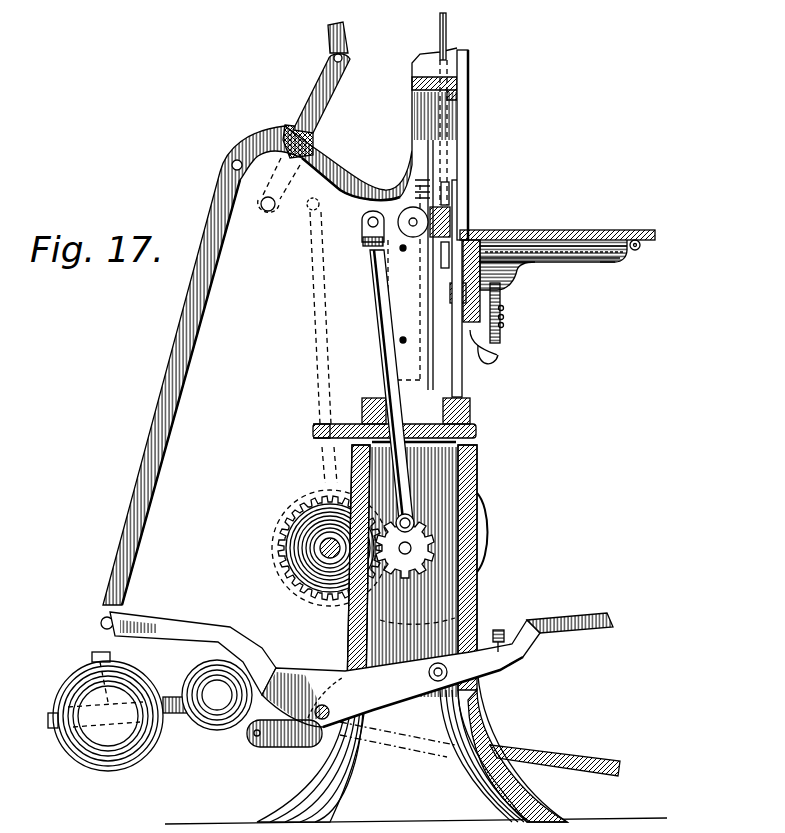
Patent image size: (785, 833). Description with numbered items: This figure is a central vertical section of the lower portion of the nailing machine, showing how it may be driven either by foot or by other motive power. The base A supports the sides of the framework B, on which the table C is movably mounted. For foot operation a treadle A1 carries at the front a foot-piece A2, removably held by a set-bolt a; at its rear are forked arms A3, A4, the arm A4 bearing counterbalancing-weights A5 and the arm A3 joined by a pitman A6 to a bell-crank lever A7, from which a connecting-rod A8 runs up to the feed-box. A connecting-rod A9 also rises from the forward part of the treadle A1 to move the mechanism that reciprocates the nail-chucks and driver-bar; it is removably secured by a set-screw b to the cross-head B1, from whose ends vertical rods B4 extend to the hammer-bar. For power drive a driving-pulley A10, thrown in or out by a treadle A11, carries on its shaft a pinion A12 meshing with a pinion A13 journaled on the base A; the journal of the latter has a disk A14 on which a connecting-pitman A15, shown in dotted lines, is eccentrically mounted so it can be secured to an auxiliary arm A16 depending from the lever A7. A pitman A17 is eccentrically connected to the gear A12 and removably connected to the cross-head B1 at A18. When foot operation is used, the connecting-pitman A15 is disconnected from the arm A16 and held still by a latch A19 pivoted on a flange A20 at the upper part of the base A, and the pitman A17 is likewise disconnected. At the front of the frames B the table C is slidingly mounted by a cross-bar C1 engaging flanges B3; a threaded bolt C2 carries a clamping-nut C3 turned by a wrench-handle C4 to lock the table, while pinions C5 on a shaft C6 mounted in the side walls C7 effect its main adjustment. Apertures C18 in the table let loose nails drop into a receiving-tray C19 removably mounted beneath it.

The base A is at (412, 435).
The treadle A1 is at (393, 683).
The foot-piece A2 is at (597, 603).
The forked arm A3 is at (203, 613).
The forked arm A4 is at (175, 722).
The counterbalancing-weights A5 is at (197, 668).
The pitman A6 is at (163, 430).
The bell-crank lever A7 is at (318, 95).
The connecting-rod A8 is at (325, 42).
The connecting-rod A9 is at (477, 440).
The driving-pulley A10 is at (483, 543).
The treadle A11 is at (547, 737).
The pinion A12 is at (405, 548).
The pinion A13 is at (273, 542).
The disk A14 is at (307, 497).
The connecting-pitman A15 is at (313, 312).
The auxiliary arm A16 is at (277, 198).
The pitman A17 is at (383, 338).
The removable connection A18 is at (365, 220).
The latch A19 is at (313, 424).
The flange A20 is at (353, 407).
The set-bolt a is at (507, 617).
The framework B is at (470, 398).
The cross-head B1 is at (448, 218).
The flanges B3 is at (463, 180).
The vertical rods B4 is at (447, 23).
The set-screw b is at (413, 236).
The table C is at (633, 232).
The cross-bar C1 is at (439, 265).
The threaded bolt C2 is at (500, 297).
The clamping-nut C3 is at (515, 280).
The wrench-handle C4 is at (500, 342).
The pinions C5 is at (504, 317).
The shaft C6 is at (482, 362).
The side walls C7 is at (597, 262).
The apertures C18 is at (545, 258).
The receiving-tray C19 is at (625, 260).